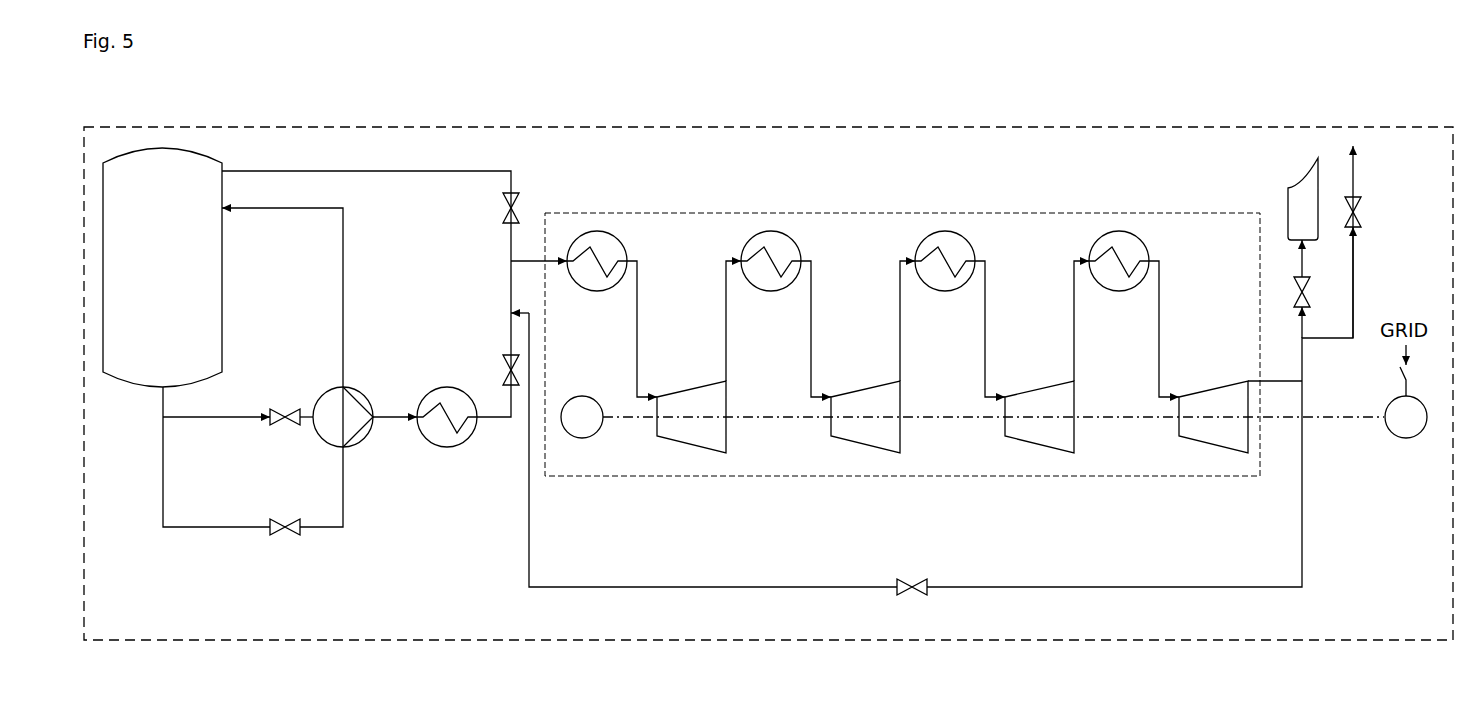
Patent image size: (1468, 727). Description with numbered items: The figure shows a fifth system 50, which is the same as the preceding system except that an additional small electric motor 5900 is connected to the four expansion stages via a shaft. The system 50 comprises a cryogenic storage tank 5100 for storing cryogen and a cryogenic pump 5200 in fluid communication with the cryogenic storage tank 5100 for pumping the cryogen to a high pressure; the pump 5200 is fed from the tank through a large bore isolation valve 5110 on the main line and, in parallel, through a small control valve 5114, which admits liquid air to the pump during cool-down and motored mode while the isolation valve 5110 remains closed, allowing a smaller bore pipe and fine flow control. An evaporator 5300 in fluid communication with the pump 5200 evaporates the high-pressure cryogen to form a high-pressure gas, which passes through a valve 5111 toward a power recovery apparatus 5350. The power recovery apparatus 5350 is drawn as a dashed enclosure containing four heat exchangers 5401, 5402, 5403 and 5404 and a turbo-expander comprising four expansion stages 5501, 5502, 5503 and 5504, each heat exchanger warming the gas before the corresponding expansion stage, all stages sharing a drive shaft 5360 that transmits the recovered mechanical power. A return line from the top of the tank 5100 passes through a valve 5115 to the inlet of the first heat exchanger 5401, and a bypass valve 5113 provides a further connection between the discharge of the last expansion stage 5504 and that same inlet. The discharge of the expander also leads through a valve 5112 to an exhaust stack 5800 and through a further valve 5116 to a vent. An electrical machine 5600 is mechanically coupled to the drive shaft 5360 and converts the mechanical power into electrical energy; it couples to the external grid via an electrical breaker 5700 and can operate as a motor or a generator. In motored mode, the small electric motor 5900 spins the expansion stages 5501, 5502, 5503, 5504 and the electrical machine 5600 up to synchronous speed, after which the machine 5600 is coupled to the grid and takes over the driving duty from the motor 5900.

The fifth system 50 is at (768, 366).
The cryogenic storage tank 5100 is at (162, 267).
The valve 5110 is at (288, 399).
The valve 5111 is at (484, 370).
The valve 5112 is at (1278, 292).
The valve 5113 is at (911, 574).
The valve 5114 is at (285, 514).
The valve 5115 is at (484, 208).
The valve 5116 is at (1378, 212).
The cryogenic pump 5200 is at (356, 430).
The evaporator 5300 is at (447, 436).
The power recovery apparatus 5350 is at (902, 362).
The drive shaft 5360 is at (993, 433).
The heat exchanger 5401 is at (597, 281).
The heat exchanger 5402 is at (771, 281).
The heat exchanger 5403 is at (945, 281).
The heat exchanger 5404 is at (1119, 281).
The expansion stage 5501 is at (691, 417).
The expansion stage 5502 is at (865, 417).
The expansion stage 5503 is at (1039, 417).
The expansion stage 5504 is at (1213, 417).
The electrical machine 5600 is at (1406, 431).
The electrical breaker 5700 is at (1375, 370).
The exhaust stack 5800 is at (1287, 199).
The motor 5900 is at (585, 431).